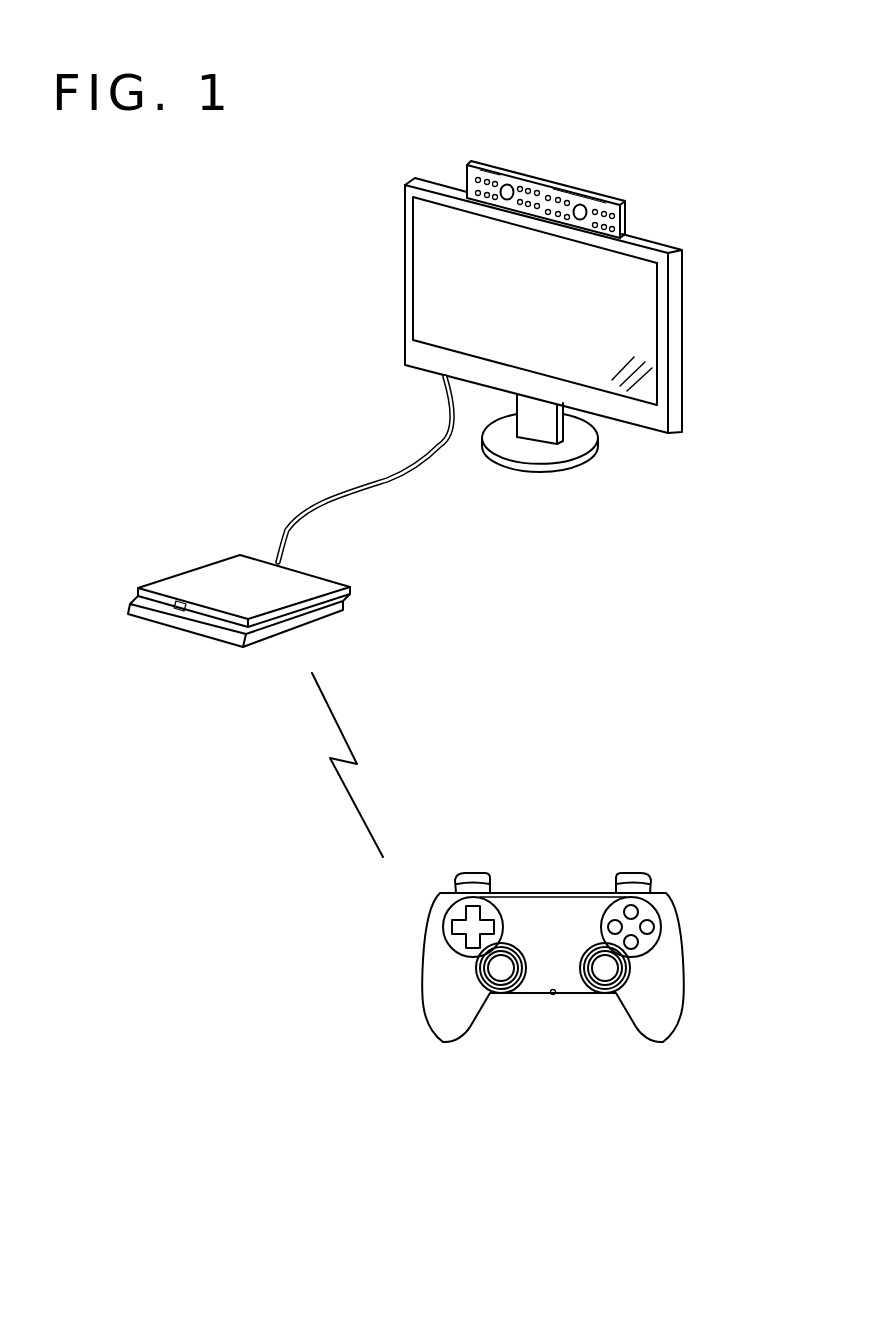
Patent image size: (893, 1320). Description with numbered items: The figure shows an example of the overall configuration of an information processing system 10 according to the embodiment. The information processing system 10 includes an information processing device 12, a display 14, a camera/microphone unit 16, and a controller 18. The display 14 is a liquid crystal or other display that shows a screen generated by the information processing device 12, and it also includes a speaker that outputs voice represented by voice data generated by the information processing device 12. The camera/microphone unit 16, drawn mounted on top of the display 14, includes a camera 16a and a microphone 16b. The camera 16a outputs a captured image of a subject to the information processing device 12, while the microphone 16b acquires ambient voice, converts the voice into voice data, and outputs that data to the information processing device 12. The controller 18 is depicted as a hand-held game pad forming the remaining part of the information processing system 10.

The information processing system 10 is at (535, 1106).
The information processing device 12 is at (190, 570).
The display 14 is at (683, 337).
The camera/microphone unit 16 is at (624, 221).
The camera 16a is at (580, 220).
The microphone 16b is at (609, 195).
The controller 18 is at (684, 948).